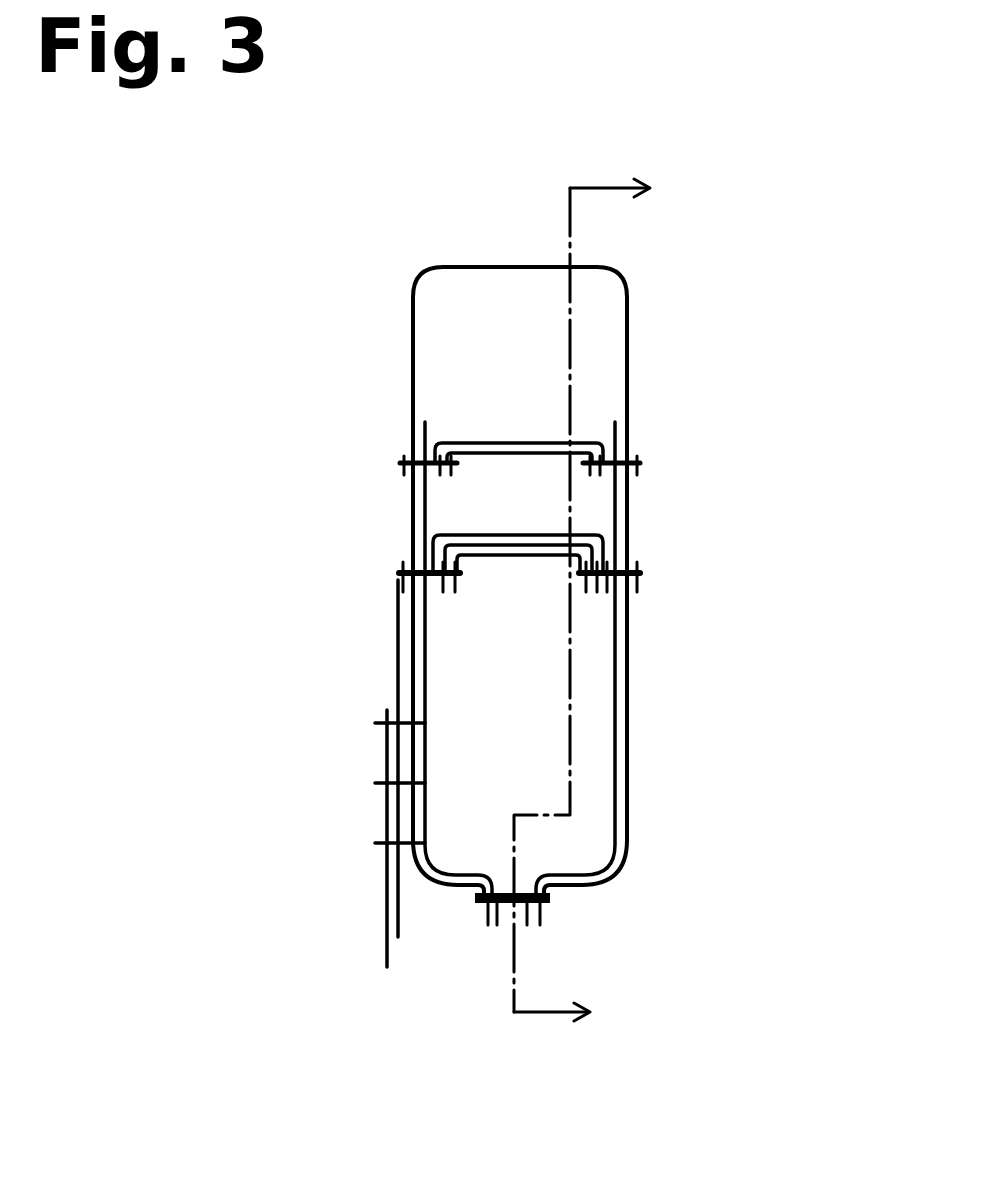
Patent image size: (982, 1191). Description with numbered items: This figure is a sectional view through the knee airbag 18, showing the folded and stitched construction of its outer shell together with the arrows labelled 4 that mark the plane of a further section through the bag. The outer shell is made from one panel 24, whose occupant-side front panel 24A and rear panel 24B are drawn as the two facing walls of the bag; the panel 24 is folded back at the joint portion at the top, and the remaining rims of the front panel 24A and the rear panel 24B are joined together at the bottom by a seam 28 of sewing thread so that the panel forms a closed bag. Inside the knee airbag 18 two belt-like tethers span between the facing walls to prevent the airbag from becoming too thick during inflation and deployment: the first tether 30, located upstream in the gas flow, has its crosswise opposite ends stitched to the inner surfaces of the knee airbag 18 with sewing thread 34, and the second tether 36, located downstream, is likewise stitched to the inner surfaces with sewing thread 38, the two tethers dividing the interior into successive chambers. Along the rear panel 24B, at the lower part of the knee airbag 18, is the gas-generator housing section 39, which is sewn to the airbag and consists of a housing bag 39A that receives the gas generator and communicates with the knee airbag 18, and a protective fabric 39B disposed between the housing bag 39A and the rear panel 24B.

The knee airbag 18 is at (220, 512).
The section line 4- 4 is at (607, 603).
The panel 24 is at (440, 264).
The occupant-side front panel 24A is at (628, 358).
The rear panel 24B is at (412, 338).
The seam 28 is at (548, 898).
The first tether 30 is at (499, 534).
The sewing thread 34 is at (404, 575).
The second tether 36 is at (503, 441).
The sewing thread 38 is at (404, 449).
The gas-generator housing section 39 is at (202, 755).
The housing bag 39A is at (386, 903).
The protective fabric 39B is at (396, 688).